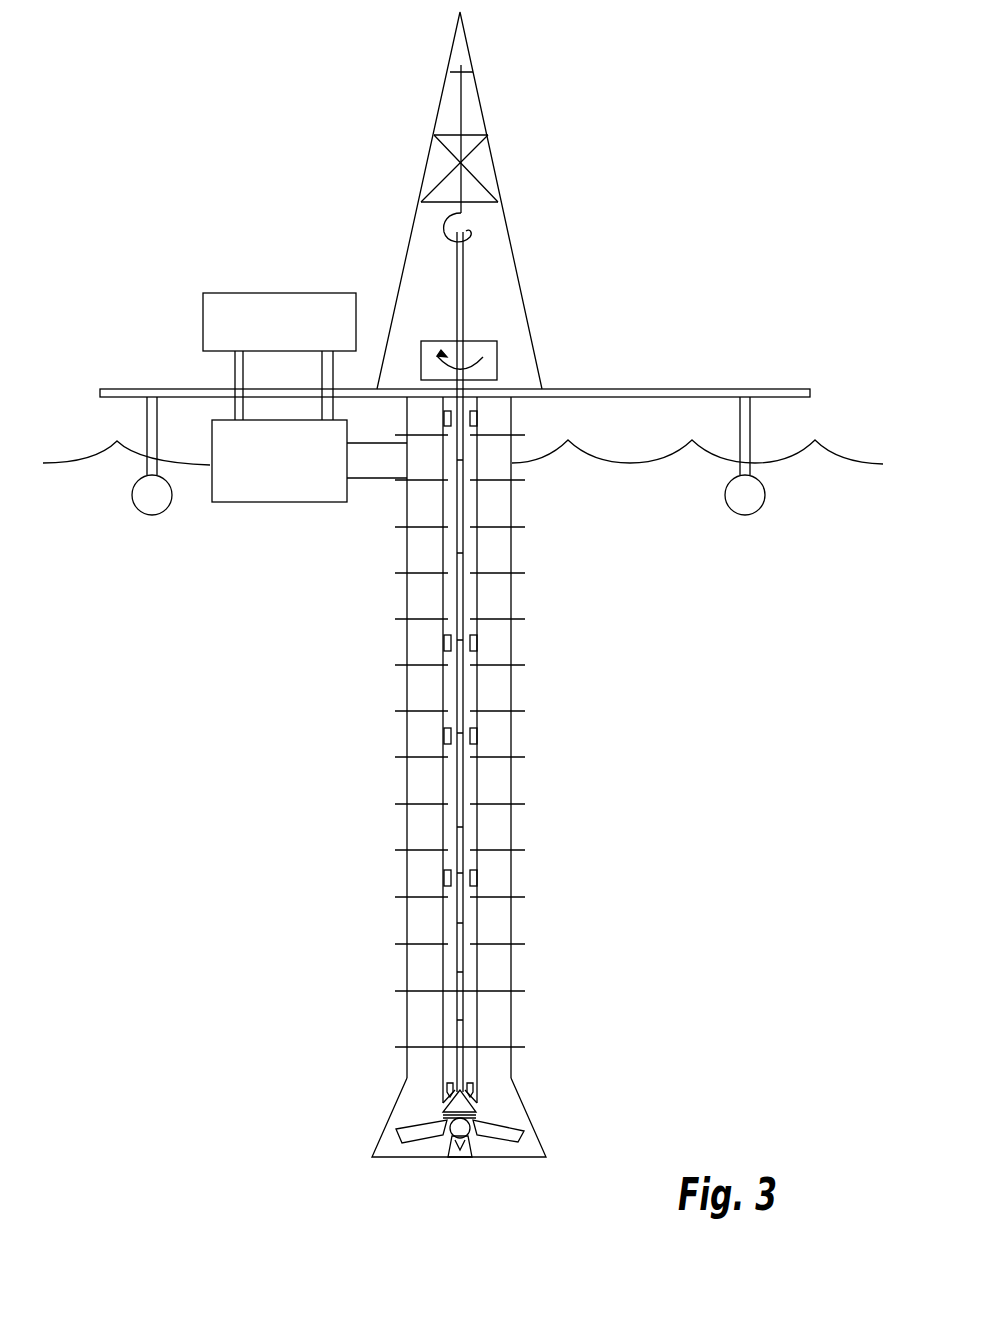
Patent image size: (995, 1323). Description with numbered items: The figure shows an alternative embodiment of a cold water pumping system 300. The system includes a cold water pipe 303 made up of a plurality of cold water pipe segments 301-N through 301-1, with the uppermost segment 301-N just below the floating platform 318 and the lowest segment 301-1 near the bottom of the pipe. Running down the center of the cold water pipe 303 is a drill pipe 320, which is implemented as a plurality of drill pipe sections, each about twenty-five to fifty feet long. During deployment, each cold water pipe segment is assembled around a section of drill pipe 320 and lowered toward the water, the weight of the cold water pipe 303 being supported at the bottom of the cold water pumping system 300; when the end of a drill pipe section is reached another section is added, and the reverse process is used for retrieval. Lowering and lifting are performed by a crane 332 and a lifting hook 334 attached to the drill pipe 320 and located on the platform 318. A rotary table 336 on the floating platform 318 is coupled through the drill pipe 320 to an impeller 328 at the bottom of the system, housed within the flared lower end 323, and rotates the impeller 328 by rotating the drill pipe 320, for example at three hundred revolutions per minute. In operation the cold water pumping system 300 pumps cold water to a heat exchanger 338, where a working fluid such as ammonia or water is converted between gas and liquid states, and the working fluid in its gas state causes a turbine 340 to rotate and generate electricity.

The cold water pumping system 300 is at (463, 605).
The cold water pipe 303 is at (458, 750).
The platform 318 is at (806, 388).
The drill pipe 320 is at (463, 279).
The bottom hole assembly housing 323 is at (512, 1072).
The impeller 328 is at (455, 1160).
The crane 332 is at (488, 135).
The lifting hook 334 is at (444, 230).
The rotary table 336 is at (497, 345).
The heat exchanger 338 is at (293, 498).
The turbine 340 is at (293, 346).
The cold water pipe segment 301-N is at (512, 473).
The cold water pipe segment 301-1 is at (511, 1003).